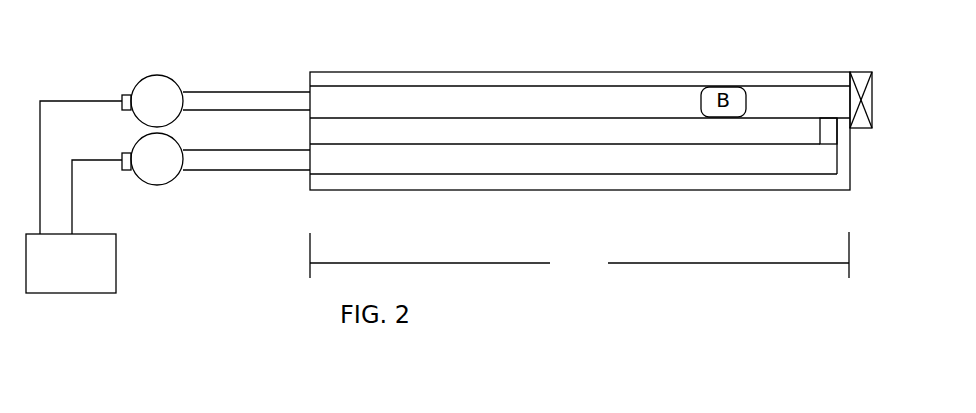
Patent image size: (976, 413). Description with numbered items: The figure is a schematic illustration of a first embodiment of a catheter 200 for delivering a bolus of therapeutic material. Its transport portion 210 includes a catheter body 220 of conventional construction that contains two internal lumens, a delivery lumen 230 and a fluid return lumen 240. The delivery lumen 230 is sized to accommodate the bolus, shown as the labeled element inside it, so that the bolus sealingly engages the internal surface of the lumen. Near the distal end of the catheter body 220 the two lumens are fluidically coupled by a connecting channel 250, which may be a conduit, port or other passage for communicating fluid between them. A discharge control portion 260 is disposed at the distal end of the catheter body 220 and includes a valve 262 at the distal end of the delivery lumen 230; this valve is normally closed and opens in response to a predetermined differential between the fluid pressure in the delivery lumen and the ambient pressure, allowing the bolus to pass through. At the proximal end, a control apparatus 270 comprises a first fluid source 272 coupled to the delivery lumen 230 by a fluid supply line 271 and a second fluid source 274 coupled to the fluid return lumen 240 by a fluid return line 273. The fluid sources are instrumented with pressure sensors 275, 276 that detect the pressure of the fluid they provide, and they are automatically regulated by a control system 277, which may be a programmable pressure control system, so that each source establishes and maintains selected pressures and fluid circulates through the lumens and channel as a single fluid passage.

The catheter 200 is at (547, 352).
The transport portion 210 is at (579, 263).
The catheter body 220 is at (365, 72).
The delivery lumen 230 is at (505, 102).
The fluid return lumen 240 is at (520, 160).
The connecting channel 250 is at (828, 128).
The discharge control portion 260 is at (873, 255).
The valve 262 is at (859, 72).
The control apparatus 270 is at (278, 255).
The fluid supply line 271 is at (247, 100).
The first fluid source 272 is at (157, 95).
The fluid return line 273 is at (247, 160).
The second fluid source 274 is at (162, 160).
The pressure sensor 275 is at (122, 97).
The pressure sensor 276 is at (122, 155).
The control system 277 is at (72, 295).